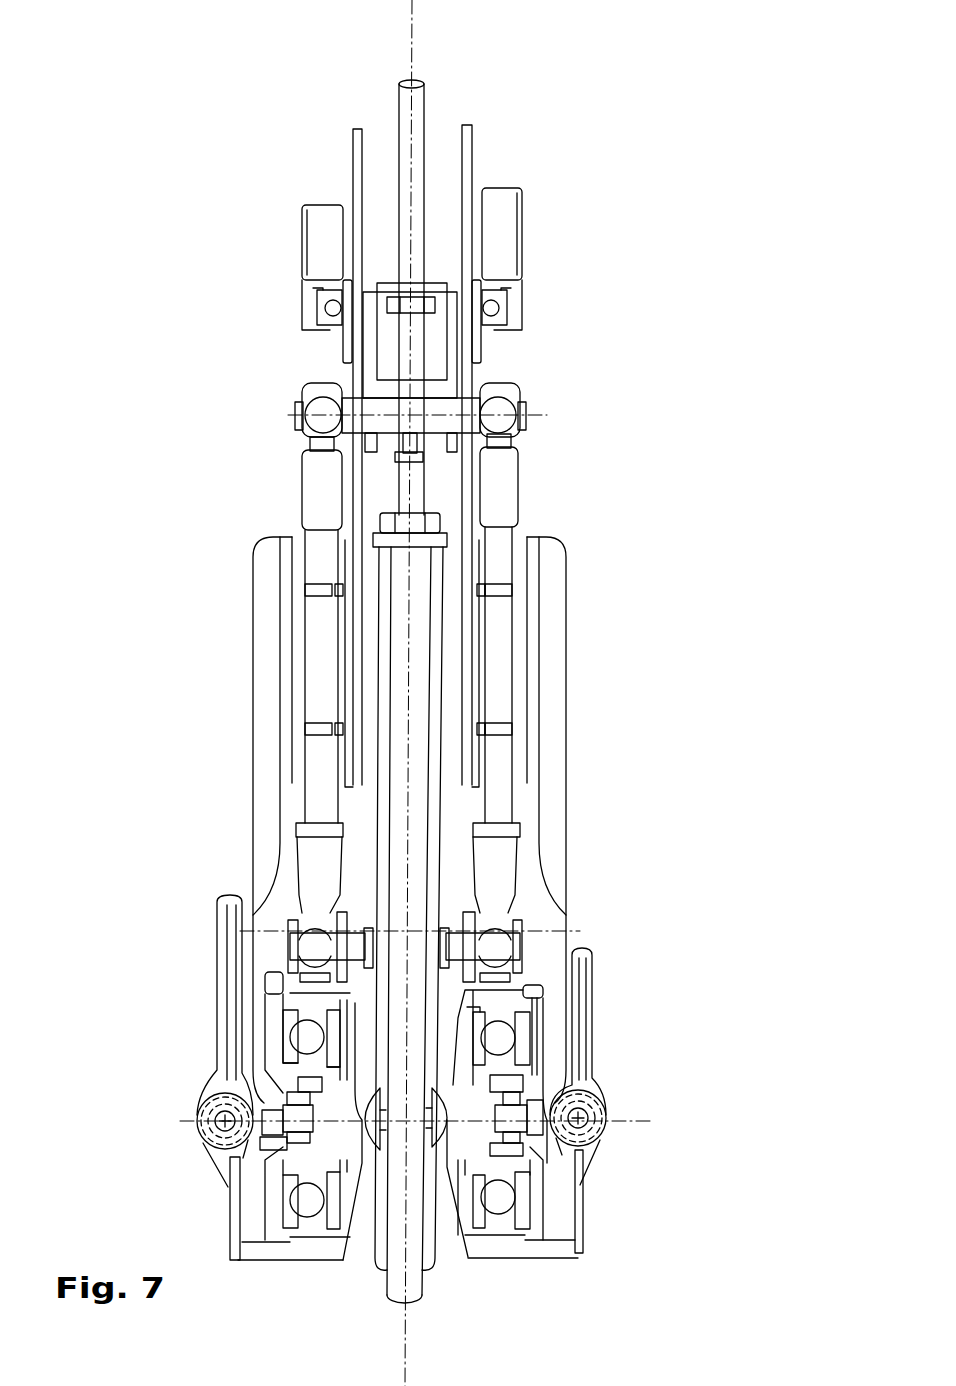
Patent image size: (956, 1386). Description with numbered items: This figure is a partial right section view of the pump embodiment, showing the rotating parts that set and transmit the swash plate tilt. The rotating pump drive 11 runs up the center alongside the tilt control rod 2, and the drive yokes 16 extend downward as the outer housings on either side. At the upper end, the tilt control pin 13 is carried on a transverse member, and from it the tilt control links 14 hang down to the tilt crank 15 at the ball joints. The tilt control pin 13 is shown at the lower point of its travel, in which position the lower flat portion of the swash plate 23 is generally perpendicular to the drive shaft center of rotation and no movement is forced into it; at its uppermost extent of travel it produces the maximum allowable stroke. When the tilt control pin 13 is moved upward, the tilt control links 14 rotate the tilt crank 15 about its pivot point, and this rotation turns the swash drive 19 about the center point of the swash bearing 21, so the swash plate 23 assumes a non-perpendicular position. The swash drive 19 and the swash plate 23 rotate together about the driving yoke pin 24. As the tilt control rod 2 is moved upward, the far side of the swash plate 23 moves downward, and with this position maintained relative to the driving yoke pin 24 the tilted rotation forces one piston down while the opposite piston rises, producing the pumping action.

The tilt control rod 2 is at (416, 148).
The rotating pump drive 11 is at (470, 177).
The tilt control pin 13 is at (460, 398).
The tilt control links 14 is at (505, 500).
The tilt crank 15 is at (340, 913).
The drive yokes 16 is at (563, 637).
The swash drive 19 is at (537, 1155).
The swash bearing 21 is at (447, 1102).
The swash plate 23 is at (573, 1240).
The driving yoke pin 24 is at (528, 1092).